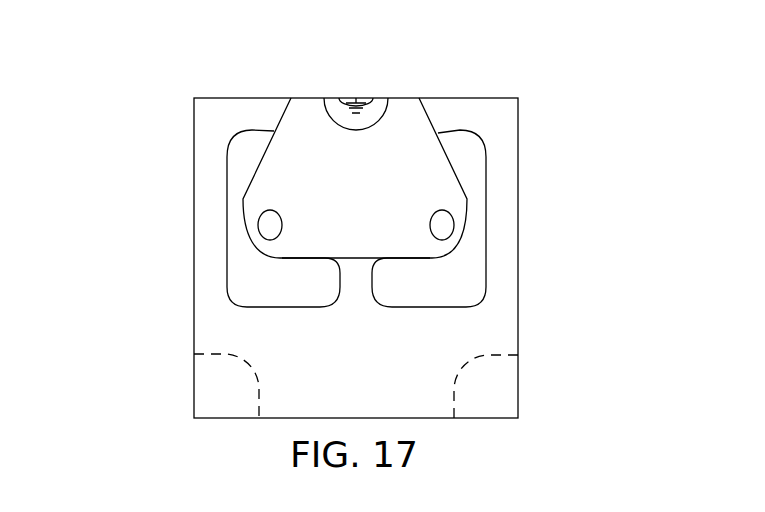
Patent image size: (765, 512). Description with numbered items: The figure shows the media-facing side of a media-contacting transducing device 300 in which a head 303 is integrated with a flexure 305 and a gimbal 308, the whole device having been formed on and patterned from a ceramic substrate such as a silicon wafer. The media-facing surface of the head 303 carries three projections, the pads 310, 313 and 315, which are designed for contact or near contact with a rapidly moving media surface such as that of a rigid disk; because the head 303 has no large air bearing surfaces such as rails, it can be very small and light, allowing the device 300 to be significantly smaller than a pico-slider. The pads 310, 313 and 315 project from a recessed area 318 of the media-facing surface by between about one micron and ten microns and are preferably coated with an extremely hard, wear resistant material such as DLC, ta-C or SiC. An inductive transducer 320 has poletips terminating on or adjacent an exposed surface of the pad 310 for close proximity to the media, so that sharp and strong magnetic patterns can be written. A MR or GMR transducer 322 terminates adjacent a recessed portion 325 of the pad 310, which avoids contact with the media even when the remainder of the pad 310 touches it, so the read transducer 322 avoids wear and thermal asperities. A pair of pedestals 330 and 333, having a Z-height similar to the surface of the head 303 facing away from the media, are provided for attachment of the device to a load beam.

The transducing device 300 is at (130, 194).
The head 303 is at (468, 207).
The flexure 305 is at (194, 257).
The gimbal 308 is at (242, 105).
The pad 310 is at (381, 119).
The pad 313 is at (282, 232).
The pad 315 is at (430, 233).
The recessed area 318 is at (376, 204).
The inductive transducer 320 is at (351, 119).
The MR or GMR transducer 322 is at (354, 101).
The recessed portion 325 is at (336, 114).
The pedestal 330 is at (202, 385).
The pedestal 333 is at (510, 388).